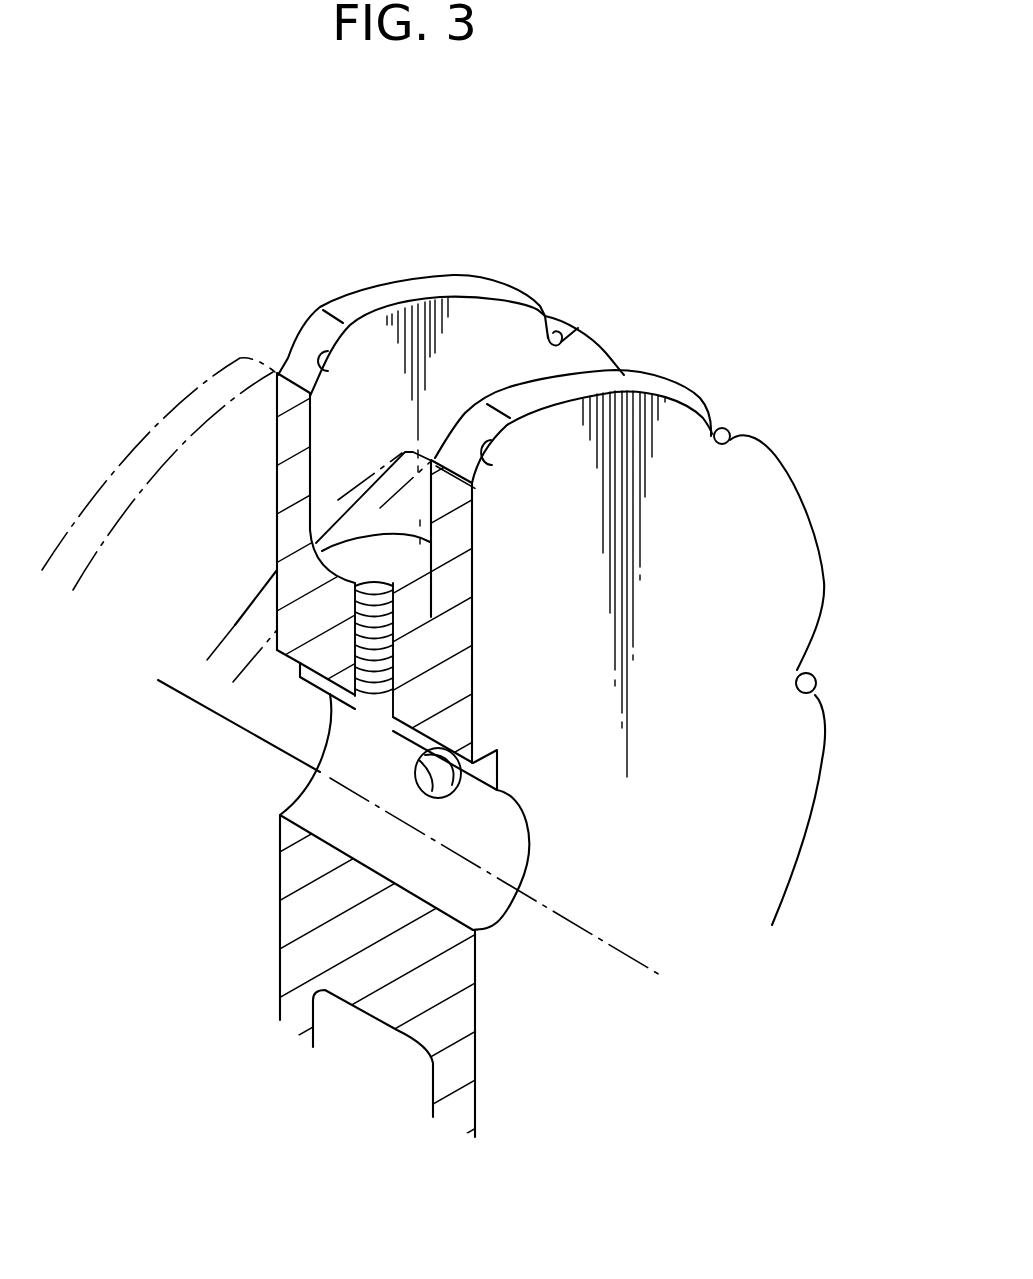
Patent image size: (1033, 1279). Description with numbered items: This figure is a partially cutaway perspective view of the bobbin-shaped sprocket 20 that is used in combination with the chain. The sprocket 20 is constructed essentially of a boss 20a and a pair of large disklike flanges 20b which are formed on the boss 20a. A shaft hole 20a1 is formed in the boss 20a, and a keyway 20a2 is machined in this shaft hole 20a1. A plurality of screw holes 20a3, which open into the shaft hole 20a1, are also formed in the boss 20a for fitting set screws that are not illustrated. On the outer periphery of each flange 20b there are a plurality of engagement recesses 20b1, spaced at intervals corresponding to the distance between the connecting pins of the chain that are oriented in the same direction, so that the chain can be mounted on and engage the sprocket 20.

The sprocket 20 is at (705, 1107).
The boss 20a is at (300, 900).
The shaft hole 20a1 is at (477, 900).
The keyway 20a2 is at (497, 762).
The screw holes 20a3 is at (380, 590).
The flanges 20b is at (443, 287).
The engagement recesses 20b1 is at (328, 371).